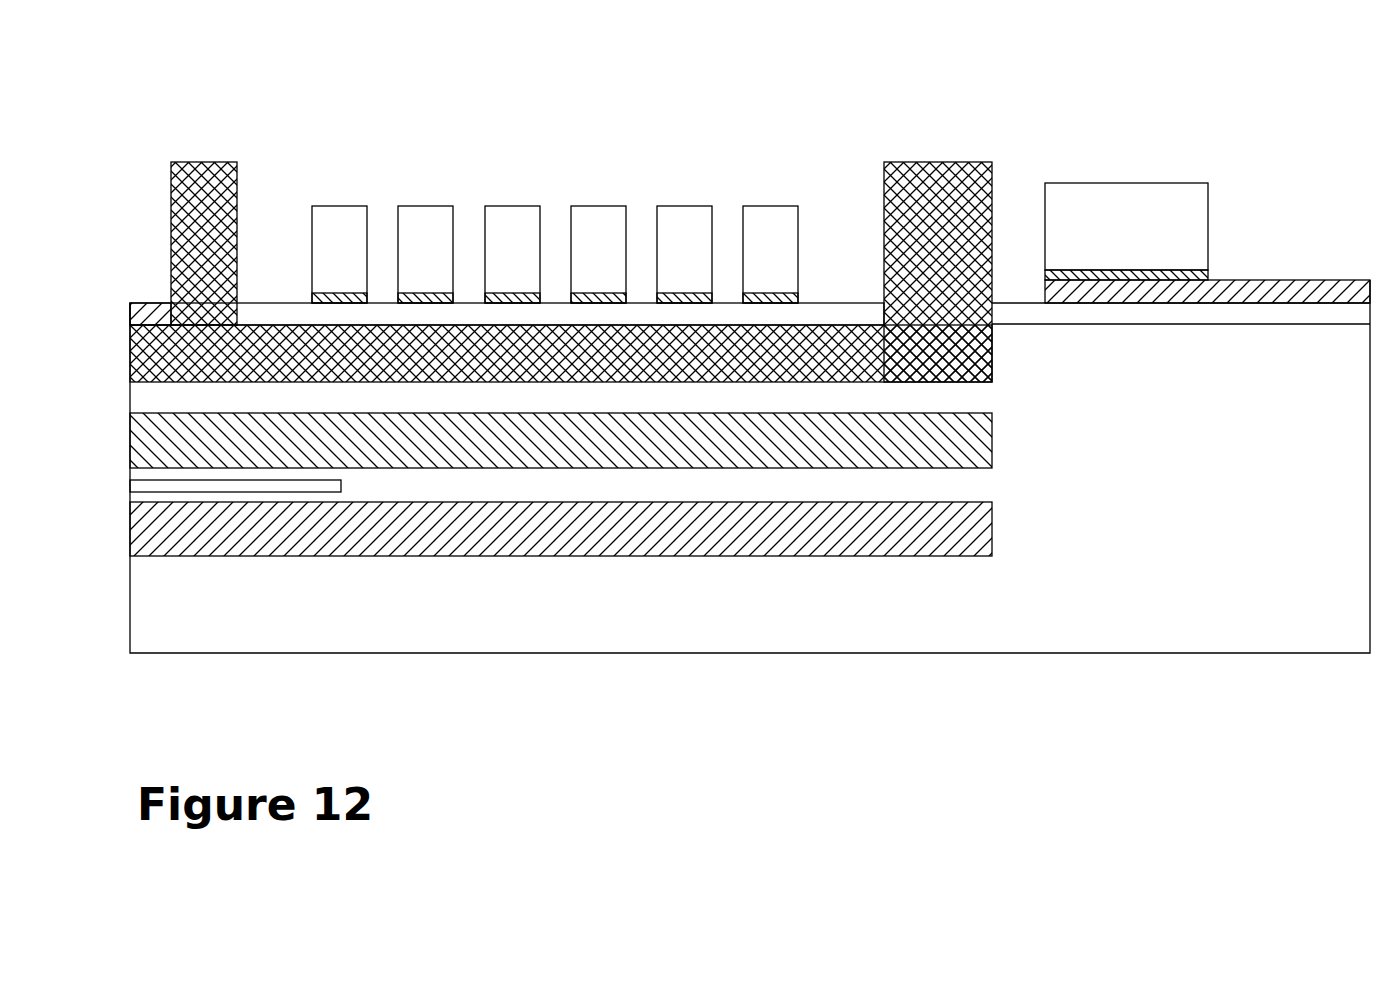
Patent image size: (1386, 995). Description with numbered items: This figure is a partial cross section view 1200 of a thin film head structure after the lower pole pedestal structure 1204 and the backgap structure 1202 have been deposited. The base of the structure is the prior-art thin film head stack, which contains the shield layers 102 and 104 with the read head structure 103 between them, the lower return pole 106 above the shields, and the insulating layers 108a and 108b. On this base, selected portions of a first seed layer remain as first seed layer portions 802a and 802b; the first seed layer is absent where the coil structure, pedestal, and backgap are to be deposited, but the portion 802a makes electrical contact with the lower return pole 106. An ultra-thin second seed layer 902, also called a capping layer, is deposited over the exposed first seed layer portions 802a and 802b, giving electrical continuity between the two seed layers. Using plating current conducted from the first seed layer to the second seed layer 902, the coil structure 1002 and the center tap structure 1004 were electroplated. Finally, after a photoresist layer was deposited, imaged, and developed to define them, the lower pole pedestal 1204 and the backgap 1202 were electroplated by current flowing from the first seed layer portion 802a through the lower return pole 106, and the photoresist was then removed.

The partial cross section view 1200 is at (1100, 707).
The shield layer 102 is at (478, 544).
The read head structure 103 is at (235, 493).
The shield layer 104 is at (472, 456).
The lower return pole 106 is at (445, 369).
The insulating layer 108a is at (1178, 313).
The insulating layer 108b is at (558, 314).
The first seed layer portion 802a is at (1210, 280).
The first seed layer portion 802b is at (150, 315).
The ultra-thin second seed layer 902 is at (1045, 275).
The coil structure 1002 is at (598, 205).
The center tap structure 1004 is at (1162, 237).
The backgap structure 1202 is at (937, 162).
The lower pole pedestal structure 1204 is at (205, 162).